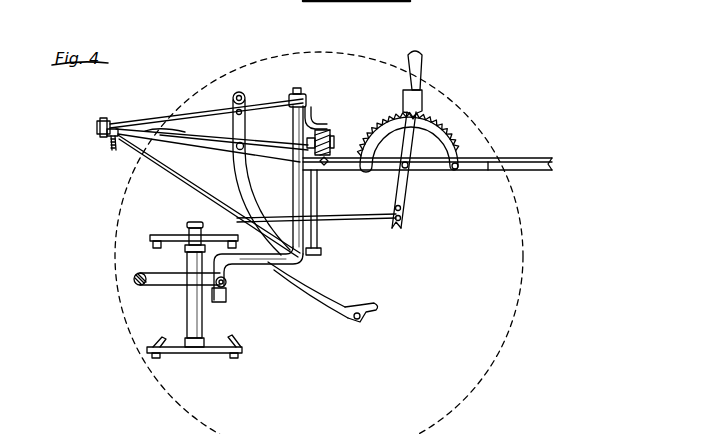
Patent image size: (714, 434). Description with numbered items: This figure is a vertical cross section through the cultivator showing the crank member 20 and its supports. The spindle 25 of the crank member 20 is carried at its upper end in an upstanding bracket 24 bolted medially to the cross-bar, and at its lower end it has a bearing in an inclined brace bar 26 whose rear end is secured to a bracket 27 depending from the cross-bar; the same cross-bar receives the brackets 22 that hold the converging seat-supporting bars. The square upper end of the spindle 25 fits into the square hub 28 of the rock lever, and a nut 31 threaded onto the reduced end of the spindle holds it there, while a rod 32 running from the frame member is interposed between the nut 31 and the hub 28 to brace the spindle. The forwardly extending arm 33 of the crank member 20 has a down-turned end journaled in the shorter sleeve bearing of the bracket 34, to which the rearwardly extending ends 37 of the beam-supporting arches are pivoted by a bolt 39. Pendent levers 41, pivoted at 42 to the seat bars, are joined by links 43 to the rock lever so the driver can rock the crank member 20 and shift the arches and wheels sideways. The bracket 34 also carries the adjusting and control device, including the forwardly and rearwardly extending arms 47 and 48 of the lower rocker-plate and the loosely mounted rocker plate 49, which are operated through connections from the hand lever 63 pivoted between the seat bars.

The crank member 20 is at (301, 262).
The brackets 22 is at (176, 135).
The upstanding bracket 24 is at (314, 124).
The spindle 25 is at (293, 193).
The inclined brace bar 26 is at (213, 186).
The bracket 27 is at (319, 193).
The square hub 28 is at (308, 108).
The nut 31 is at (298, 93).
The rod 32 is at (192, 113).
The forwardly extending arm 33 is at (275, 264).
The bracket 34 is at (190, 299).
The rearwardly extending ends 37 is at (186, 277).
The bolt 39 is at (227, 283).
The pendent levers 41 is at (330, 307).
The pivot 42 is at (244, 146).
The links 43 is at (246, 97).
The forwardly extending arm 47 is at (180, 372).
The rearwardly extending arm 48 is at (237, 372).
The rocker plate 49 is at (188, 234).
The hand lever 63 is at (422, 64).